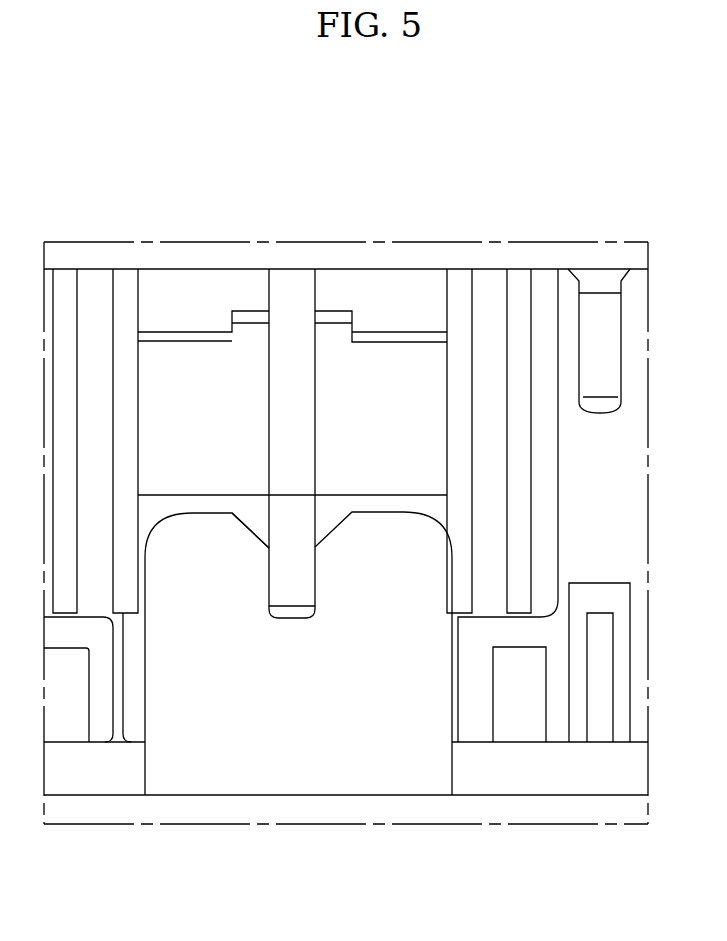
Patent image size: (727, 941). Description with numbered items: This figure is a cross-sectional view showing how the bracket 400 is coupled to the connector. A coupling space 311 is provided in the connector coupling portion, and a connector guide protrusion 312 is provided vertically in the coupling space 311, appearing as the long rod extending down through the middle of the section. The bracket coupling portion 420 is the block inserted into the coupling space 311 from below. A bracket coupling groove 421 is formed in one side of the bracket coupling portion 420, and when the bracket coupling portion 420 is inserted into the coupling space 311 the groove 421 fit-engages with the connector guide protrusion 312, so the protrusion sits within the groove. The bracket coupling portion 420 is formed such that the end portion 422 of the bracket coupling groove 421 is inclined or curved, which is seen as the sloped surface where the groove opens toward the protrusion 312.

The coupling space 311 is at (325, 368).
The connector guide protrusion 312 is at (292, 328).
The mold base assembly 400 is at (377, 746).
The bracket coupling portion 420 is at (420, 596).
The bracket coupling groove 421 is at (270, 606).
The end portion 422 is at (248, 530).